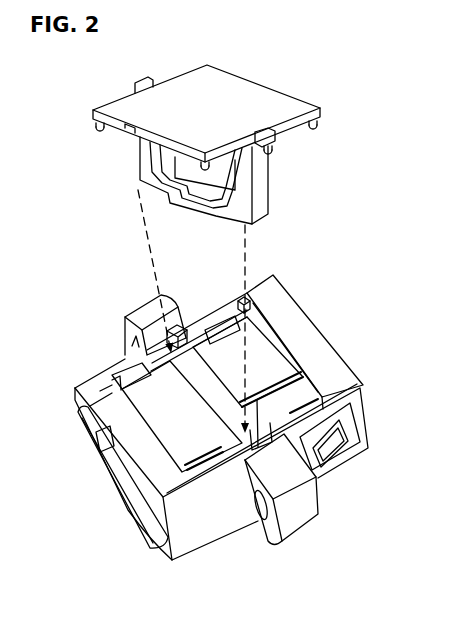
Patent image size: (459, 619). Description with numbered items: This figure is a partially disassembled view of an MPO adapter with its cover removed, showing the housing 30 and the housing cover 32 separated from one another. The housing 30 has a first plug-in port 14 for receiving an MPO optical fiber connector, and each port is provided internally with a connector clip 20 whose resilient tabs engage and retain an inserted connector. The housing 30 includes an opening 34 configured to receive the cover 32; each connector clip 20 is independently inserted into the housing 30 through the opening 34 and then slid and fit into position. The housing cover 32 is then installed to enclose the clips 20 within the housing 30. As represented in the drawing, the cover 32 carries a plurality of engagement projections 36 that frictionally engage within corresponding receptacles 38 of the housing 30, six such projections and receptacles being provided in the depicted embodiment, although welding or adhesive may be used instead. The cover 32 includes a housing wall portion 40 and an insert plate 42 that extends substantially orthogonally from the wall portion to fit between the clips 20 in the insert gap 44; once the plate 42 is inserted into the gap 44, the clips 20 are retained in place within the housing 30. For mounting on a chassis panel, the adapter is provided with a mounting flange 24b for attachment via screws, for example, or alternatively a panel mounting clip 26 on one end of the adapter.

The first plug-in port 14 is at (115, 467).
The connector clip 20 is at (235, 380).
The mounting flange 24b is at (298, 515).
The panel mounting clip 26 is at (330, 445).
The housing 30 is at (81, 358).
The housing cover 32 is at (101, 160).
The opening 34 is at (263, 318).
The engagement projections 36 is at (272, 150).
The receptacles 38 is at (243, 304).
The housing wall portion 40 is at (255, 100).
The insert plate 42 is at (258, 187).
The insert gap 44 is at (184, 362).